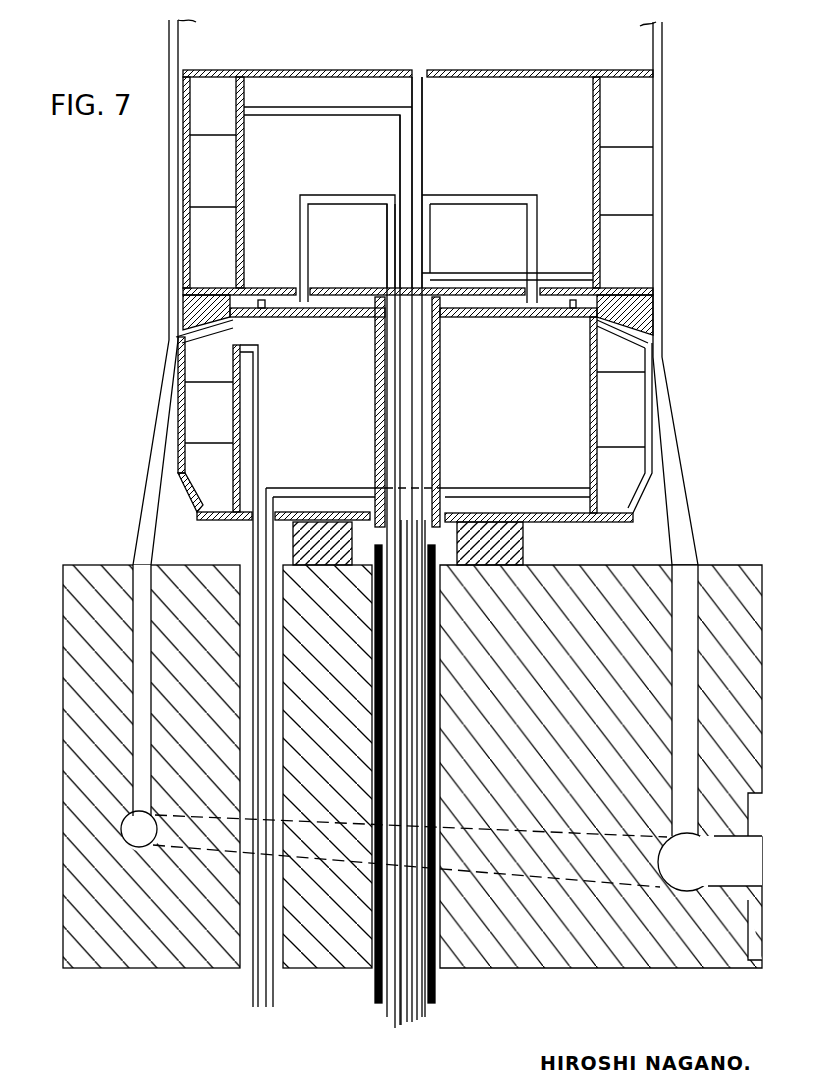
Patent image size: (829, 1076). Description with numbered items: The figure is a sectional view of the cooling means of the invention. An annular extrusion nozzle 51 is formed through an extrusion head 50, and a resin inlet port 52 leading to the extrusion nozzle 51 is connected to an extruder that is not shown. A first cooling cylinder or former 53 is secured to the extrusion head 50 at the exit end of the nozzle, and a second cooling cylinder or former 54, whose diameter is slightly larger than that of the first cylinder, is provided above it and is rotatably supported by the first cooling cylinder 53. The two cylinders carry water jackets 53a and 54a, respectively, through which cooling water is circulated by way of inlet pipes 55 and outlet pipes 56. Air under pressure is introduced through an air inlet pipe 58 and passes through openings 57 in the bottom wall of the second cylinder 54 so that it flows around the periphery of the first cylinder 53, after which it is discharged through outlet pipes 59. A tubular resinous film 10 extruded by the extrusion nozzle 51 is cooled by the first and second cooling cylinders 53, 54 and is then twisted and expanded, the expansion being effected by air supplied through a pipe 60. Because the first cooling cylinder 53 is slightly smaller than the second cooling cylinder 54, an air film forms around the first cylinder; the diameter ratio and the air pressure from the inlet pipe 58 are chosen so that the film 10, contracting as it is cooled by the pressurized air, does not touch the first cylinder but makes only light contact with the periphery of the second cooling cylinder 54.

The tubular resinous film 10 is at (683, 473).
The extrusion head 50 is at (748, 582).
The annular extrusion nozzle 51 is at (700, 563).
The resin inlet port 52 is at (742, 888).
The first cooling cylinder 53 is at (578, 367).
The water jacket 53a is at (636, 422).
The second cooling cylinder 54 is at (642, 73).
The water jacket 54a is at (640, 243).
The inlet pipe 55 is at (253, 1007).
The outlet pipe 56 is at (272, 1007).
The opening 57 is at (296, 298).
The air inlet pipe 58 is at (386, 1016).
The outlet pipe 59 is at (243, 568).
The pipe 60 is at (420, 70).